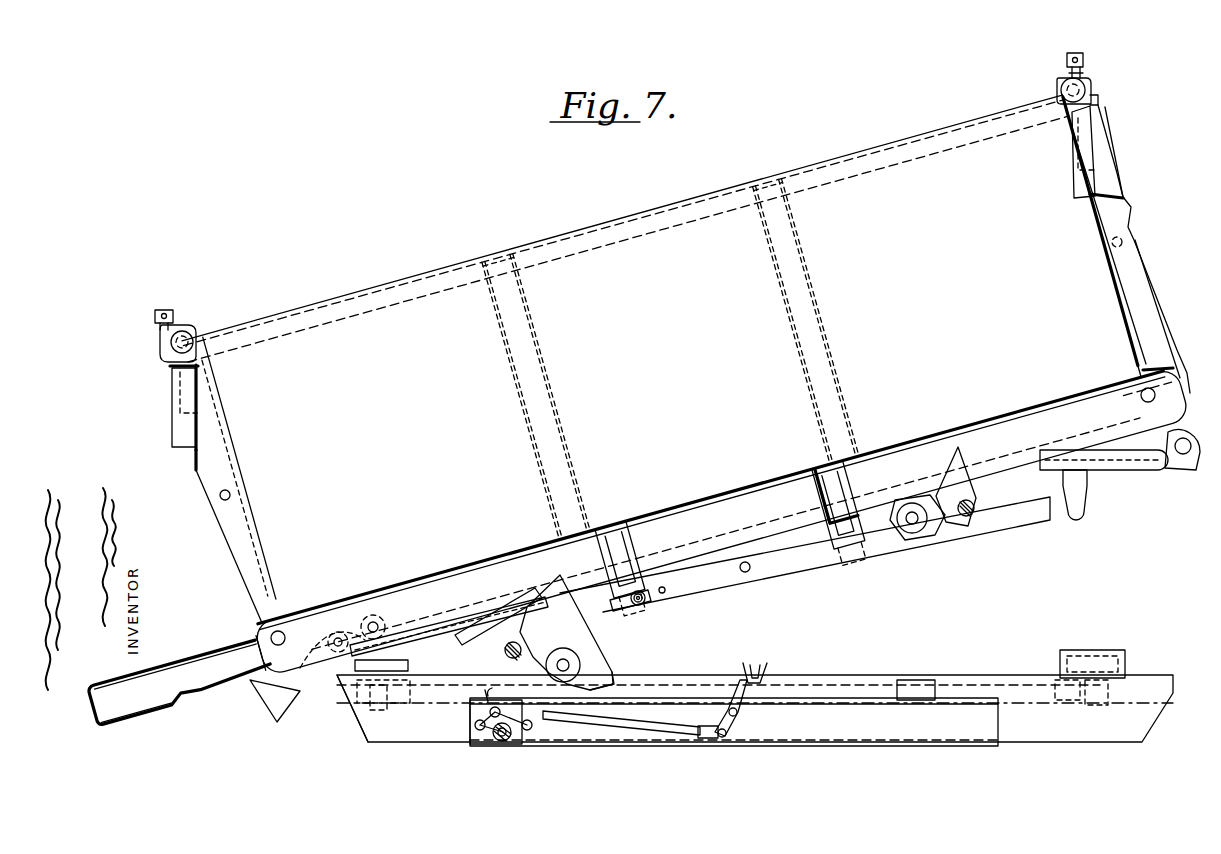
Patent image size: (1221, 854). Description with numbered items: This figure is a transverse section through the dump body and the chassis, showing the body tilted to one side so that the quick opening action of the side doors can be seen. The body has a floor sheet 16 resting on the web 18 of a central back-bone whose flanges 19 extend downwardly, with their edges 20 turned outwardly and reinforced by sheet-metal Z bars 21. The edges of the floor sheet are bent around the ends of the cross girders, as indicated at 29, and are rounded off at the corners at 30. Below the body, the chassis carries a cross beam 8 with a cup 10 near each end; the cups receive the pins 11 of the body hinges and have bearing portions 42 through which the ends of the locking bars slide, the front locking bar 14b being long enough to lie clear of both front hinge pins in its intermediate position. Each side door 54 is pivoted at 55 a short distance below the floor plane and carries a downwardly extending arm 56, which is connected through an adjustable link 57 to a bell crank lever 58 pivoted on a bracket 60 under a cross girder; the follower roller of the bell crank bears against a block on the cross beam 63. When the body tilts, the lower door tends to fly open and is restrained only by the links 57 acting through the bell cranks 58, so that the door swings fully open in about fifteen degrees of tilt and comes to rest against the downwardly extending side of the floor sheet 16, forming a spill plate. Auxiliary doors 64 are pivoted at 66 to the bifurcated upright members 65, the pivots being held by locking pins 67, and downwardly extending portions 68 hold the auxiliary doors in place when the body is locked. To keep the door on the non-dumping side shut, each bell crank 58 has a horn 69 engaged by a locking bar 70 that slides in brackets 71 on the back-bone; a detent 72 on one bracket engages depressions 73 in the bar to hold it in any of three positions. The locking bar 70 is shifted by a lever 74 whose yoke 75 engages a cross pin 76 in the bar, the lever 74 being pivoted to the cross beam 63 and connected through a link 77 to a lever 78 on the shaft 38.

The cross beam 8 is at (915, 680).
The cup 10 is at (1104, 650).
The pin 11 is at (353, 715).
The front locking bar 14b is at (851, 688).
The floor sheet 16 is at (896, 445).
The web 18 is at (742, 490).
The flanges 19 is at (823, 490).
The edges 20 is at (607, 587).
The Z bars 21 is at (627, 552).
The bent edges of floor sheet 29 is at (273, 702).
The rounded corners 30 is at (255, 638).
The shaft 38 is at (502, 745).
The bearing portions 42 is at (403, 700).
The side door 54 is at (182, 687).
The pivot 55 is at (281, 630).
The arm 56 is at (328, 605).
The link 57 is at (453, 637).
The bell crank lever 58 is at (946, 522).
The bracket 60 is at (490, 632).
The cross beam 63 is at (848, 740).
The auxiliary door 64 is at (188, 428).
The upright member 65 is at (215, 537).
The pivot 66 is at (170, 350).
The locking pin 67 is at (154, 318).
The downwardly extending portion 68 is at (190, 460).
The horn 69 is at (603, 681).
The locking bar 70 is at (718, 578).
The bracket 71 is at (636, 606).
The detent 72 is at (650, 606).
The depressions 73 is at (661, 587).
The lever 74 is at (745, 700).
The yoke 75 is at (762, 672).
The cross pin 76 is at (748, 574).
The link 77 is at (652, 730).
The lever 78 is at (478, 735).